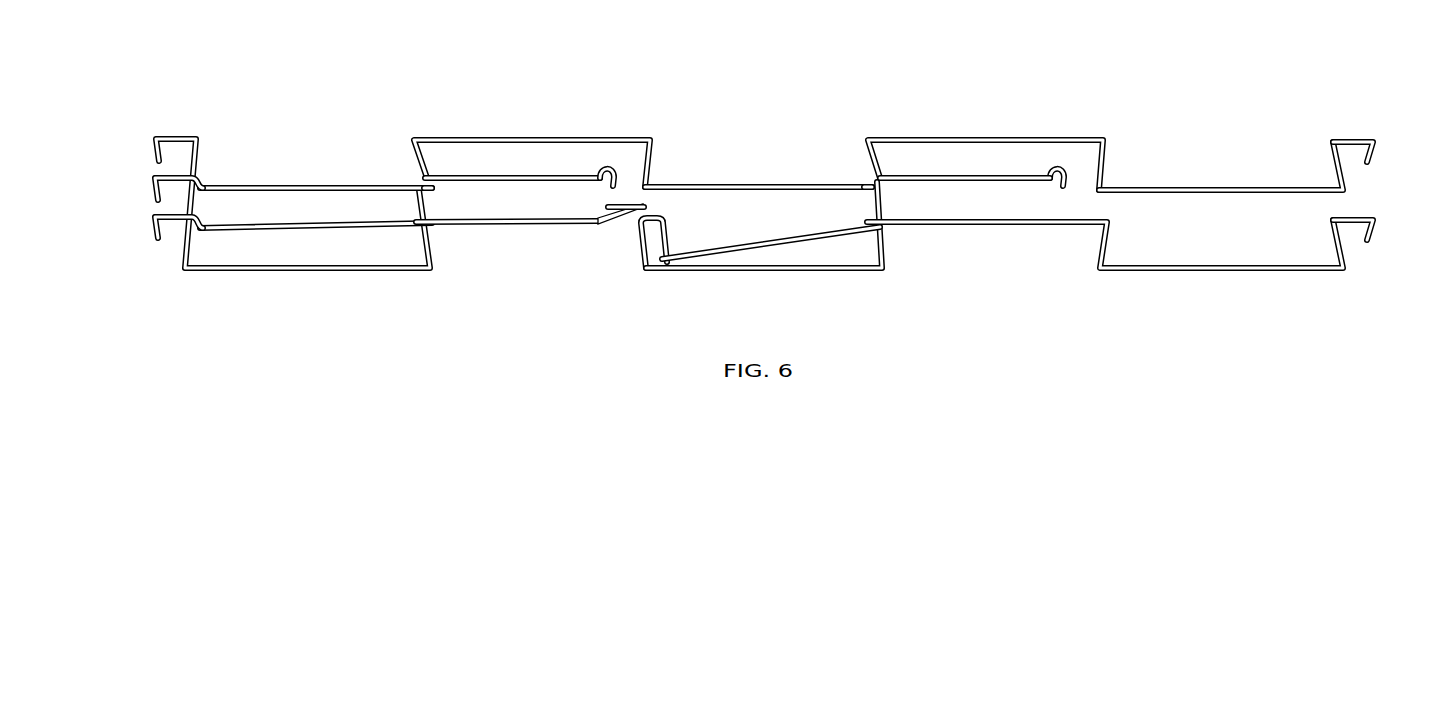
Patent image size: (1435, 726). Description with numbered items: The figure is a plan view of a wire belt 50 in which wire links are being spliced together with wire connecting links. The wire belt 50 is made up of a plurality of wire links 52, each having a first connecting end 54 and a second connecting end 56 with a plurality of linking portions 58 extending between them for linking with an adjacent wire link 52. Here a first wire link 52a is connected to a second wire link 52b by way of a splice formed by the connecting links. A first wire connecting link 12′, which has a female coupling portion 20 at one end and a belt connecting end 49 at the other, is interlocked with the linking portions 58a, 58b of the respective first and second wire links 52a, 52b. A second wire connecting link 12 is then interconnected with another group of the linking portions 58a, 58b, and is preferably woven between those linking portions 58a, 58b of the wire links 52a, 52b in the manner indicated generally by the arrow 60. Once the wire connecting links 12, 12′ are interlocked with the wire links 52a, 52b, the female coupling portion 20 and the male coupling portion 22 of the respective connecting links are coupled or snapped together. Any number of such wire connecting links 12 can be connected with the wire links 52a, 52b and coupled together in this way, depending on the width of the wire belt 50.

The wire belt 50 is at (1149, 50).
The wire link 52 is at (893, 290).
The first wire link 52a is at (210, 271).
The second wire link 52b is at (242, 186).
The linking portion 58a is at (200, 216).
The linking portion 58b is at (433, 190).
The belt connecting end 49 is at (150, 184).
The first connecting end 54 is at (152, 228).
The wire connecting link 12′ is at (455, 176).
The wire connecting link 12 is at (806, 222).
The female coupling portion 20 is at (600, 166).
The male coupling portion 22 is at (596, 214).
The arrow 60 is at (642, 157).
The linking portions 58 is at (1080, 282).
The second connecting end 56 is at (1370, 214).